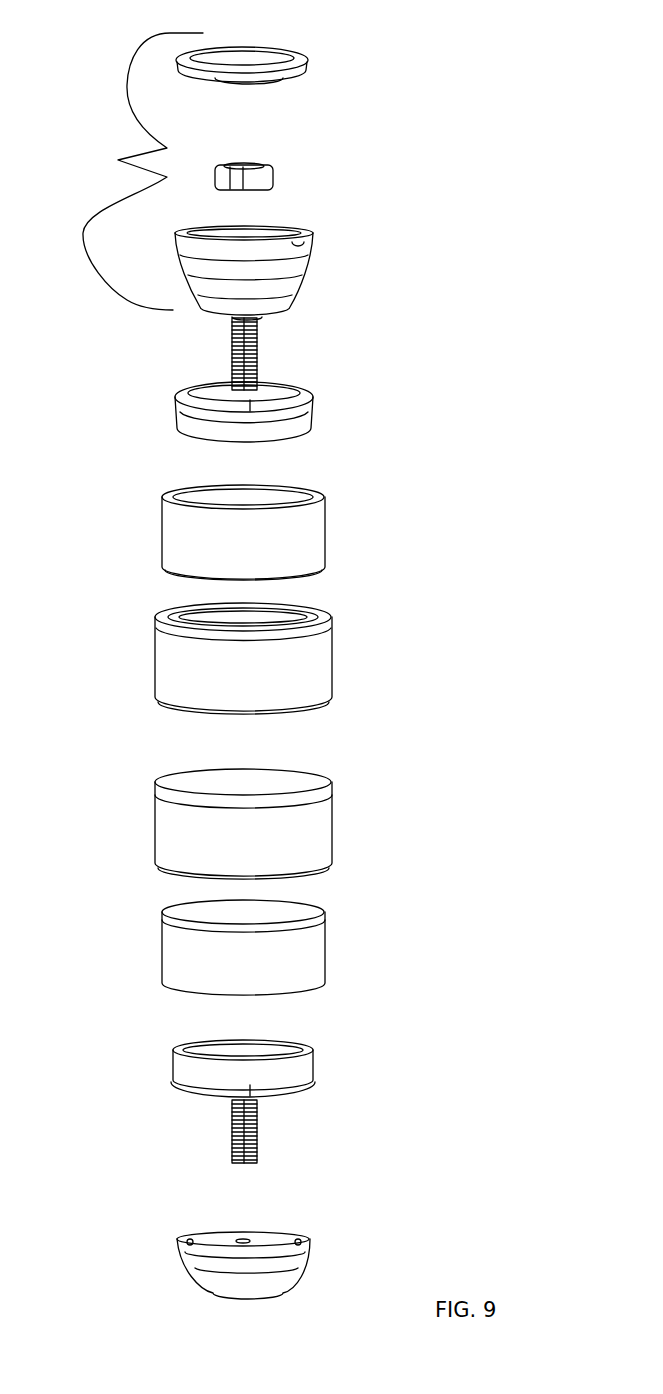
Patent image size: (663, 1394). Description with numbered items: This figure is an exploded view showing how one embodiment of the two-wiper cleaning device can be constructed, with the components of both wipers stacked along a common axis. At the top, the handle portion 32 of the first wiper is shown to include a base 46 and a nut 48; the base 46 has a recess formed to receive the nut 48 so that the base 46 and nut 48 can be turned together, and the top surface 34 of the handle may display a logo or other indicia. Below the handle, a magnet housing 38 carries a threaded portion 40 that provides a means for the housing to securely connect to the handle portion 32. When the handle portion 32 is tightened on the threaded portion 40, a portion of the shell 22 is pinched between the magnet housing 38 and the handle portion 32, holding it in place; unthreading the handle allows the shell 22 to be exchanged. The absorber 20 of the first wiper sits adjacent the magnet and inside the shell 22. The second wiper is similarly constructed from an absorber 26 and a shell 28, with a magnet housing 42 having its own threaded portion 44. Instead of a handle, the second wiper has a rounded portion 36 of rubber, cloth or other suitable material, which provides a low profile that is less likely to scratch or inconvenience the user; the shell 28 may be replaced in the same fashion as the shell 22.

The handle portion 32 is at (136, 171).
The top surface 34 is at (298, 65).
The nut 48 is at (260, 177).
The base 46 is at (300, 252).
The threaded portion 40 is at (257, 353).
The magnet housing 38 is at (293, 420).
The absorber 20 is at (300, 533).
The shell 22 is at (300, 667).
The shell 28 is at (297, 830).
The absorber 26 is at (288, 967).
The magnet housing 42 is at (297, 1068).
The threaded portion 44 is at (257, 1130).
The rounded portion 36 is at (278, 1260).